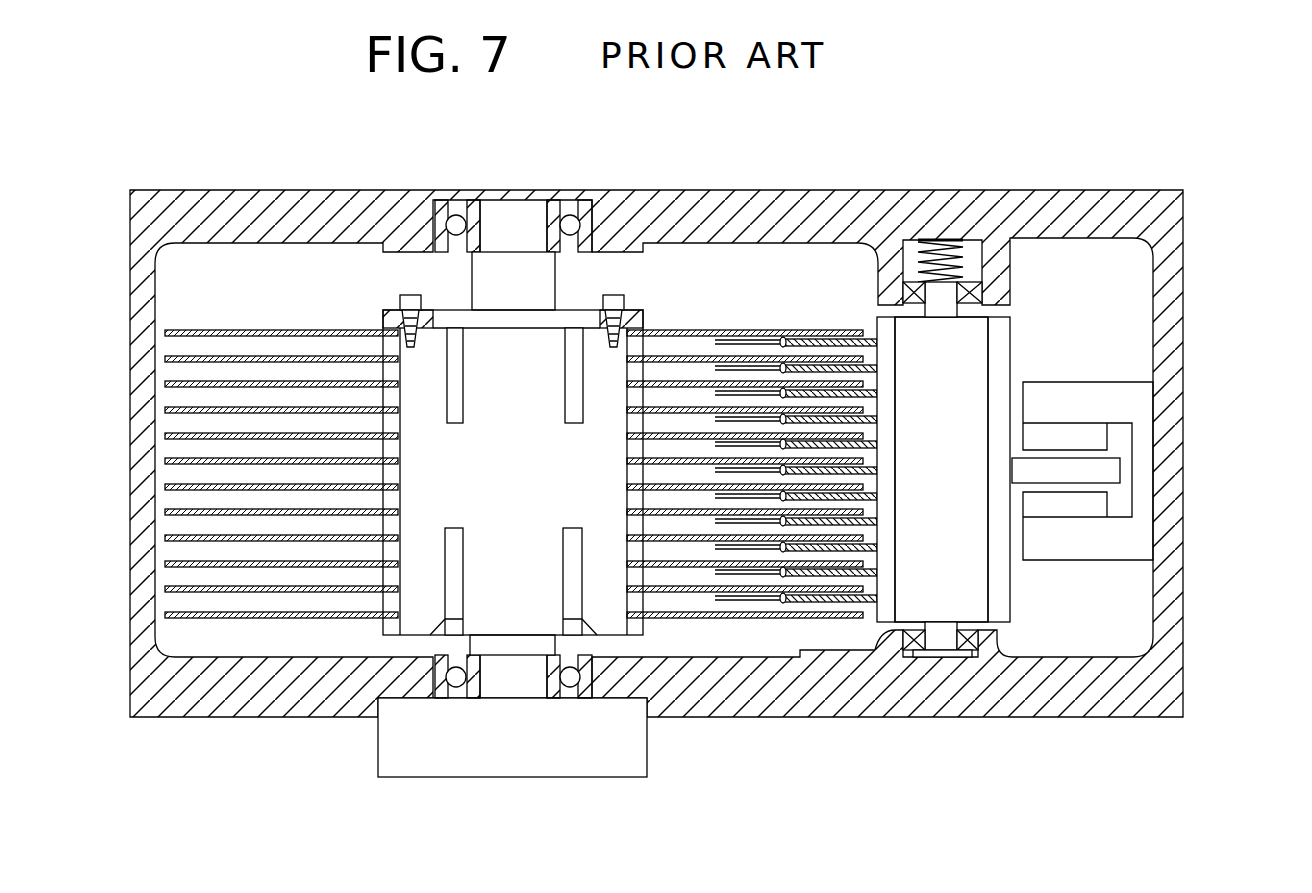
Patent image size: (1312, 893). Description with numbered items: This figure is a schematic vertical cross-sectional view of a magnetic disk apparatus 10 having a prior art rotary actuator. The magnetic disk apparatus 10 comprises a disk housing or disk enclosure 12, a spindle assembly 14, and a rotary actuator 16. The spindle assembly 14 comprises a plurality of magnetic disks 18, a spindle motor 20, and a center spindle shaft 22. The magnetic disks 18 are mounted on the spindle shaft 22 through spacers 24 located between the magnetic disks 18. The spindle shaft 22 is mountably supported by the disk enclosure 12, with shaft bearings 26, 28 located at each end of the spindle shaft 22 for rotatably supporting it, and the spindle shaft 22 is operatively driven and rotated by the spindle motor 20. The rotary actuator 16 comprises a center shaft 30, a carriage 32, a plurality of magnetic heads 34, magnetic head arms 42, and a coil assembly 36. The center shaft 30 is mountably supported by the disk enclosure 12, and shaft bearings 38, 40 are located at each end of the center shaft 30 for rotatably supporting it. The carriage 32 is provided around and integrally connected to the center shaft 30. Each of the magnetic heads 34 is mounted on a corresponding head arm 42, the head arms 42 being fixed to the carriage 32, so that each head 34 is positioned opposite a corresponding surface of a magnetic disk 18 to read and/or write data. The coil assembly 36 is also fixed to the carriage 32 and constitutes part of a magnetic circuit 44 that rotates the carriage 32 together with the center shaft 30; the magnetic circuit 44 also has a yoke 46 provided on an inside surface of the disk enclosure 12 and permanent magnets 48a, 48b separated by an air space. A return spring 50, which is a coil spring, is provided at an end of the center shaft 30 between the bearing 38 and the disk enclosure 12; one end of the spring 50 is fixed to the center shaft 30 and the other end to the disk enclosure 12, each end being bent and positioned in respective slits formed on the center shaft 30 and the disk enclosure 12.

The magnetic disk apparatus 10 is at (1003, 163).
The disk enclosure 12 is at (1192, 695).
The spindle assembly 14 is at (291, 268).
The rotary actuator 16 is at (1055, 290).
The magnetic disks 18 is at (198, 620).
The spindle motor 20 is at (627, 752).
The spindle shaft 22 is at (523, 347).
The spacers 24 is at (390, 597).
The shaft bearing 26 is at (470, 200).
The shaft bearing 28 is at (438, 702).
The center shaft 30 is at (955, 567).
The carriage 32 is at (1000, 608).
The magnetic heads 34 is at (730, 330).
The coil assembly 36 is at (1100, 470).
The shaft bearing 38 is at (968, 305).
The shaft bearing 40 is at (907, 657).
The magnetic head arms 42 is at (842, 332).
The magnetic circuit 44 is at (1100, 358).
The yoke 46 is at (1140, 490).
The permanent magnet 48a is at (1080, 437).
The permanent magnet 48b is at (1090, 505).
The return spring 50 is at (913, 242).